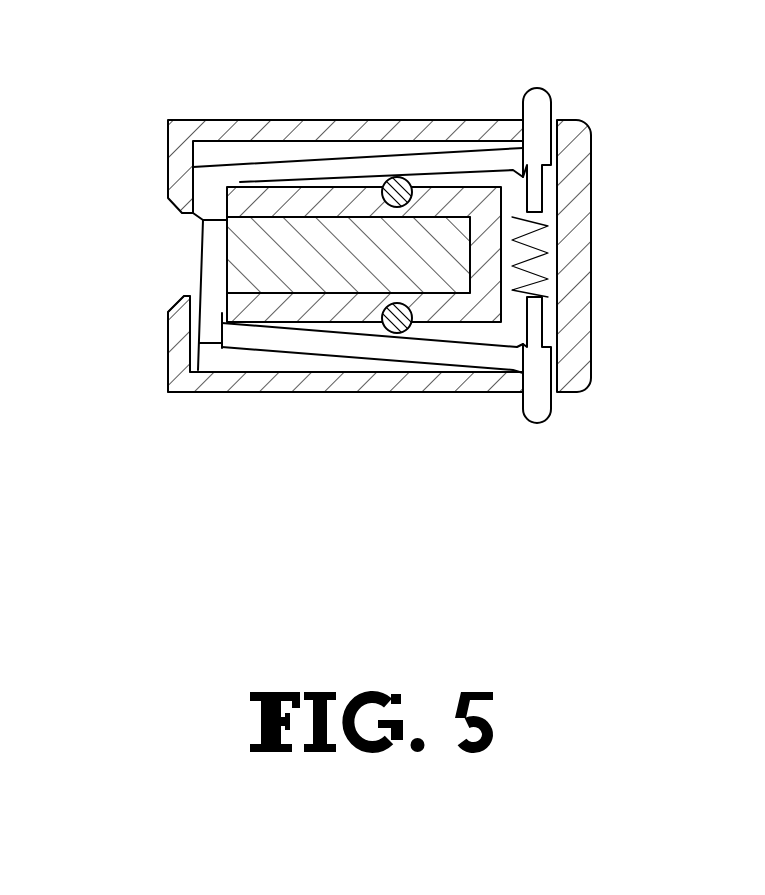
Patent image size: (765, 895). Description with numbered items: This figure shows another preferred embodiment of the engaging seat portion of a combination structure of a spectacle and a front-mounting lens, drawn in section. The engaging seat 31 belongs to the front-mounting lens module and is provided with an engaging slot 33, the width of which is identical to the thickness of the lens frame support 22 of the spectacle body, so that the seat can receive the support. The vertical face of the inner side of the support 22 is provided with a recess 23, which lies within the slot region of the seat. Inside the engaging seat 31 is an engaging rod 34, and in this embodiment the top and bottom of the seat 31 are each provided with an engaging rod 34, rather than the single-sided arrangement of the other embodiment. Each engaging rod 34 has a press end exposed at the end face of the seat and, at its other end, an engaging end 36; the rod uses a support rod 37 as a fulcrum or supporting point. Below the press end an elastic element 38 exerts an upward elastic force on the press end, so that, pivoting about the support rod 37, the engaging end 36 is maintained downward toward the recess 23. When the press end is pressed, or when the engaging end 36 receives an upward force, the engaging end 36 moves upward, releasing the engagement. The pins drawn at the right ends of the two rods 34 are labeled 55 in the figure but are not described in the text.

The engaging seat 31 is at (288, 120).
The lens frame support 22 is at (167, 392).
The engaging slot 33 is at (307, 368).
The recess 23 is at (196, 255).
The engaging end 36 is at (199, 219).
The support rod 37 is at (400, 177).
The engaging rod 34 is at (481, 163).
The pins 55 is at (540, 86).
The elastic element 38 is at (597, 275).